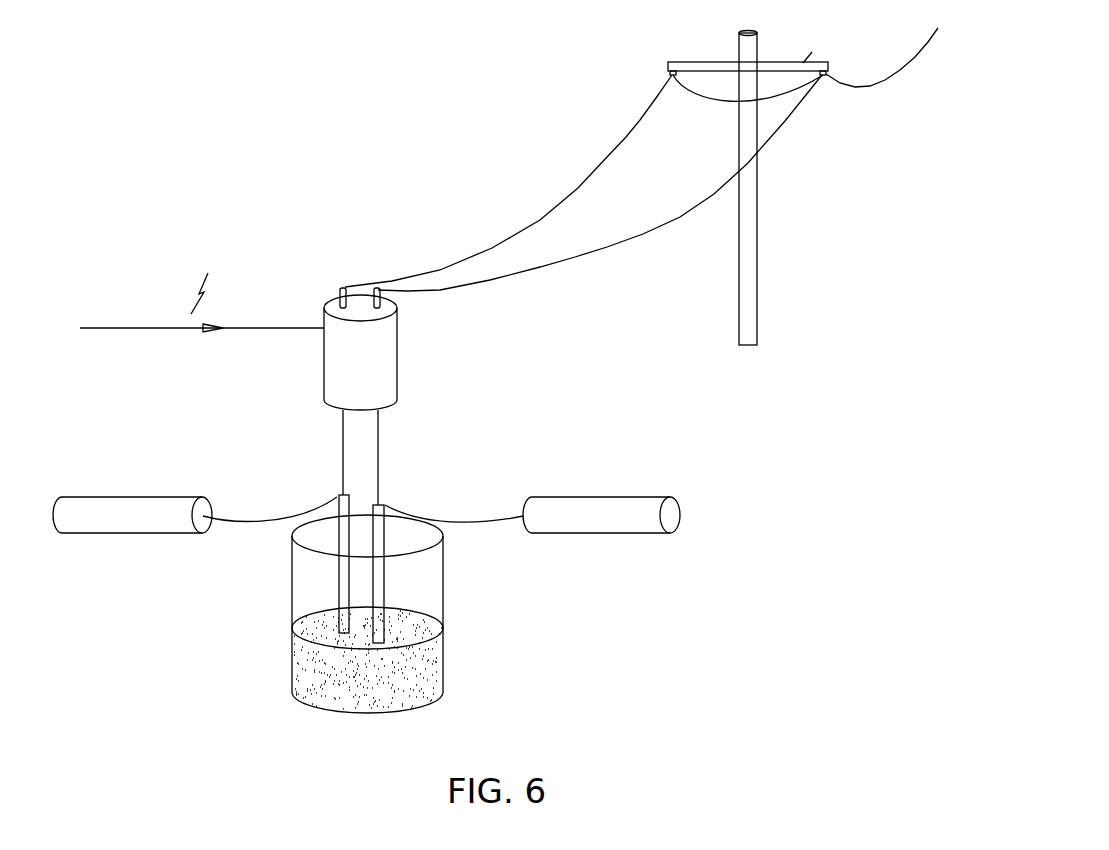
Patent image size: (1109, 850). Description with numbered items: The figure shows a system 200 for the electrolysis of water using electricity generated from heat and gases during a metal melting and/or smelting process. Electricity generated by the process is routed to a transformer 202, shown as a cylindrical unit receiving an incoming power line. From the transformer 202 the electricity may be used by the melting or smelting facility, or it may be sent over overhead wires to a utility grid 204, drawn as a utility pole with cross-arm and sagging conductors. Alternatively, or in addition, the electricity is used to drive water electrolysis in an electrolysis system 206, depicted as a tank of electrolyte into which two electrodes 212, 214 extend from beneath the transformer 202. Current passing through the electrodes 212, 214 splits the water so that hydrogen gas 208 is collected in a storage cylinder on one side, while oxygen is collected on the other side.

The system 200 is at (292, 183).
The transformer 202 is at (398, 384).
The utility grid 204 is at (890, 78).
The electrolysis system 206 is at (443, 665).
The hydrogen gas 208 is at (166, 497).
The electrode 212 is at (337, 517).
The electrode 214 is at (443, 538).